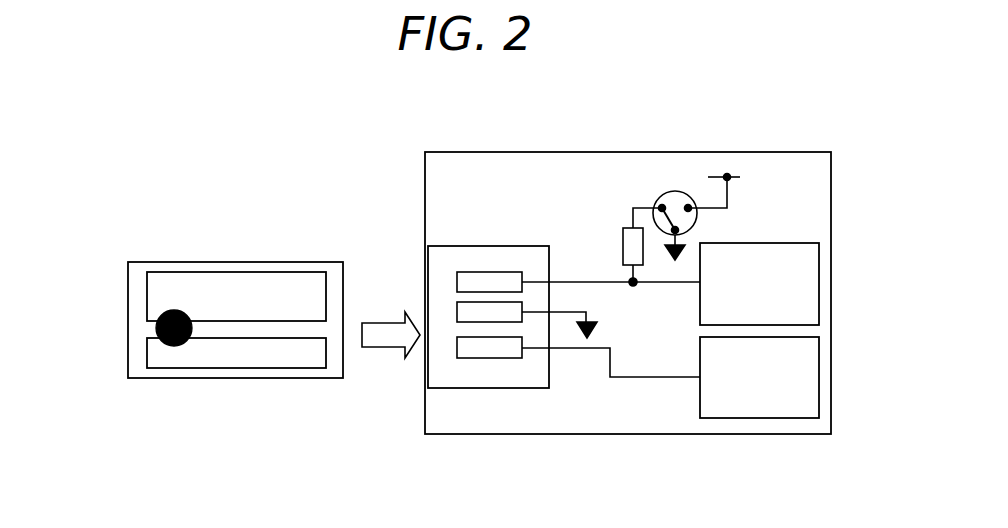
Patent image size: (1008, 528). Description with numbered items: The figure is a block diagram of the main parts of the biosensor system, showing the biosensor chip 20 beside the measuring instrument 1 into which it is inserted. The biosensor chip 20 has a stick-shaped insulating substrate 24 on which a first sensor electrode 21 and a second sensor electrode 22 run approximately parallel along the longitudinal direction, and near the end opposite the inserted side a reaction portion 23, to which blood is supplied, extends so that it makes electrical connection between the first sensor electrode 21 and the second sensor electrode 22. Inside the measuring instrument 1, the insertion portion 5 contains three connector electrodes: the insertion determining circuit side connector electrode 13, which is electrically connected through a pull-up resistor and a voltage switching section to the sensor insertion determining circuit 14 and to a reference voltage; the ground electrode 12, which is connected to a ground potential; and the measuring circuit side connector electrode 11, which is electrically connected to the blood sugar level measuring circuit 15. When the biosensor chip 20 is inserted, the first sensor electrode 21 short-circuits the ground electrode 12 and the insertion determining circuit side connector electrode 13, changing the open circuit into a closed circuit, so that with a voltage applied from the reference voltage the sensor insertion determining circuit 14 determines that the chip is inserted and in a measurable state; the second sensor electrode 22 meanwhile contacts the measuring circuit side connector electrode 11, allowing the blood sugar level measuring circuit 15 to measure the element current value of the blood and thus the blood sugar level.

The measuring instrument 1 is at (736, 138).
The insertion portion 5 is at (432, 280).
The measuring circuit side connector electrode 11 is at (482, 350).
The ground electrode 12 is at (495, 307).
The insertion determining circuit side connector electrode 13 is at (467, 283).
The sensor insertion determining circuit 14 is at (819, 278).
The blood sugar level measuring circuit 15 is at (819, 370).
The biosensor chip 20 is at (186, 247).
The first sensor electrode 21 is at (280, 280).
The second sensor electrode 22 is at (257, 350).
The reaction portion 23 is at (172, 345).
The insulating substrate 24 is at (128, 318).